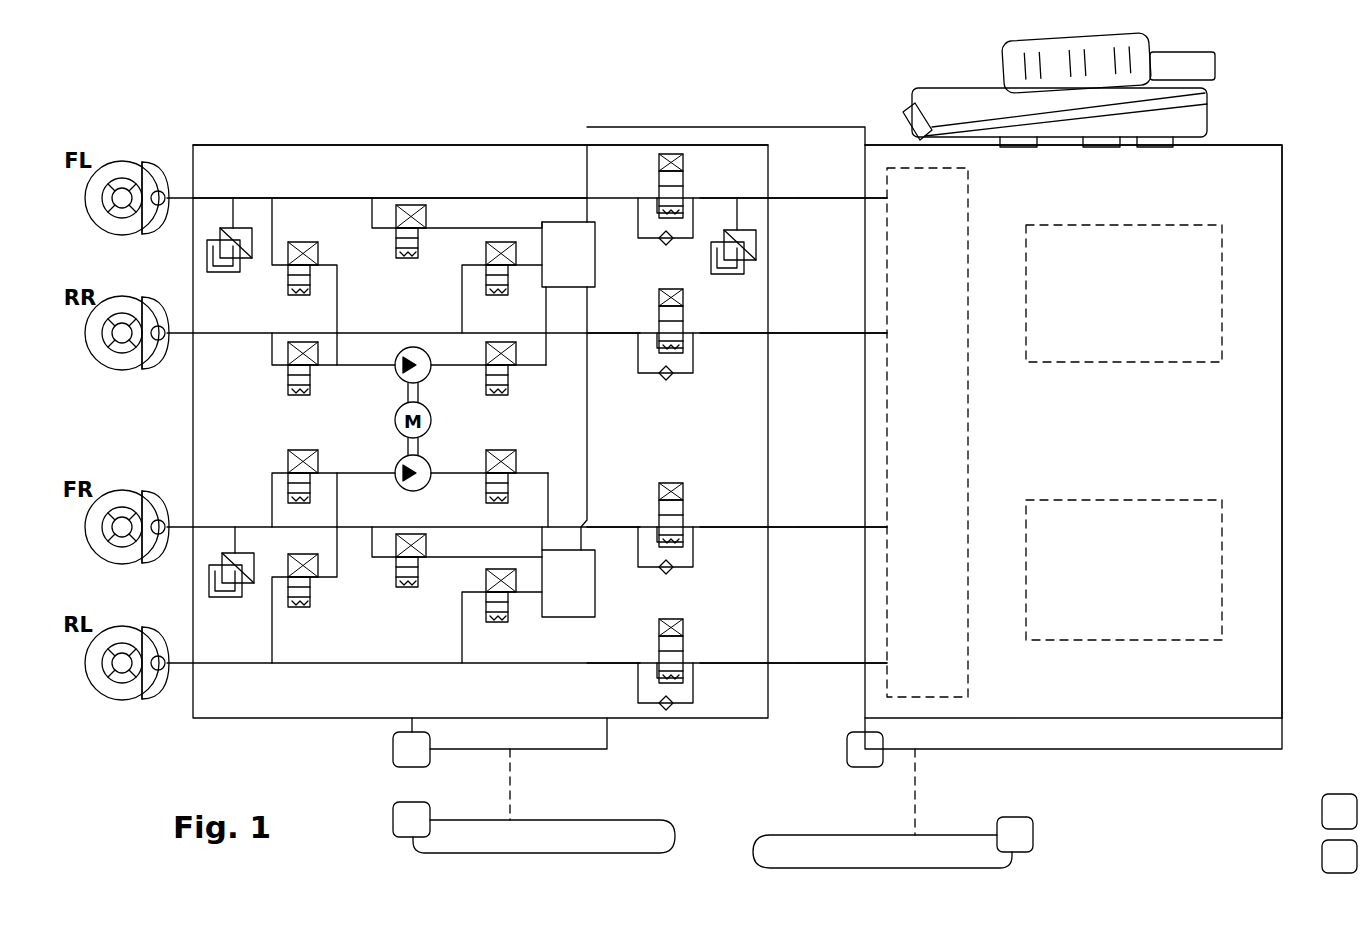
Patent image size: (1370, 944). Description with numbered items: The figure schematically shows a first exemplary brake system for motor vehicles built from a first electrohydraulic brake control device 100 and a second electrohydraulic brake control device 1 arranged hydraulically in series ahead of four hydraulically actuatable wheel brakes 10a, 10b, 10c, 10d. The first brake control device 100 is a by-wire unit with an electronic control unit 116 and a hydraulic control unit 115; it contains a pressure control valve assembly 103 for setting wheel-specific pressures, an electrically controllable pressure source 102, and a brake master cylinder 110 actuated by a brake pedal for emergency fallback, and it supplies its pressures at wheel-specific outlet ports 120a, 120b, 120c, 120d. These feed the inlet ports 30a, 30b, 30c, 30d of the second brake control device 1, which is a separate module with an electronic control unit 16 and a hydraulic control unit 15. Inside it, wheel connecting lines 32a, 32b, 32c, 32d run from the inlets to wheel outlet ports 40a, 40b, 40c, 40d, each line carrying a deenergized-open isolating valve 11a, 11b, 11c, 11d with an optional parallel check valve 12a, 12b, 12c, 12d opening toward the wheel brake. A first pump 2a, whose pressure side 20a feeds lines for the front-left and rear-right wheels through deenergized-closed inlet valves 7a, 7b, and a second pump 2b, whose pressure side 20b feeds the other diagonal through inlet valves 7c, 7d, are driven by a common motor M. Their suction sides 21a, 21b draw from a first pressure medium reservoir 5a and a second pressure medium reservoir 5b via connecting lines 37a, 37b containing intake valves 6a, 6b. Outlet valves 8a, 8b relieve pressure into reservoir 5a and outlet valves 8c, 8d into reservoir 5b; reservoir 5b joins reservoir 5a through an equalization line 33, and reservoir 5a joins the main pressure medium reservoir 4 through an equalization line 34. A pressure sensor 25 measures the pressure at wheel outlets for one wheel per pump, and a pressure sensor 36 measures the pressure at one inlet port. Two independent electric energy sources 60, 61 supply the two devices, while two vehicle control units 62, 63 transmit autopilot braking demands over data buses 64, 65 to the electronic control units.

The second electrohydraulic brake control device 1 is at (397, 140).
The main pressure medium reservoir 4 is at (947, 95).
The hydraulic open-loop and closed-loop control unit 15 is at (276, 143).
The equalization line 34 is at (680, 126).
The first electrohydraulic brake control device 100 is at (1262, 128).
The hydraulic open-loop and closed-loop control unit 115 is at (1250, 184).
The brake master cylinder 110 is at (1195, 300).
The pressure control valve assembly 103 is at (940, 432).
The electrically controllable pressure source 102 is at (1195, 575).
The electronic open-loop and closed-loop control unit 116 is at (1147, 742).
The electronic open-loop and closed-loop control unit 16 is at (472, 750).
The first electric energy source 60 is at (1320, 812).
The second electric energy source 61 is at (1320, 856).
The vehicle control unit 62 is at (857, 848).
The vehicle control unit 63 is at (662, 838).
The data bus 64 is at (918, 792).
The data bus 65 is at (512, 795).
The wheel brake 10a is at (149, 182).
The wheel brake 10b is at (149, 318).
The wheel brake 10c is at (149, 512).
The wheel brake 10d is at (149, 648).
The wheel outlet port 40a is at (176, 212).
The wheel outlet port 40b is at (176, 347).
The wheel outlet port 40c is at (176, 541).
The wheel outlet port 40d is at (176, 677).
The pressure sensor 25 is at (231, 223).
The pressure sensor 36 is at (748, 265).
The inlet valve 7a is at (285, 278).
The inlet valve 7b is at (285, 383).
The inlet valve 7c is at (285, 462).
The inlet valve 7d is at (306, 605).
The outlet valve 8a is at (420, 214).
The outlet valve 8b is at (500, 243).
The outlet valve 8c is at (392, 588).
The outlet valve 8d is at (482, 585).
The first pressure medium reservoir 5a is at (558, 238).
The second pressure medium reservoir 5b is at (565, 601).
The first pump 2a is at (413, 350).
The second pump 2b is at (417, 489).
The pressure side 20a is at (401, 357).
The pressure side 20b is at (400, 482).
The suction side 21a is at (423, 352).
The suction side 21b is at (425, 484).
The intake valve 6a is at (511, 378).
The intake valve 6b is at (486, 460).
The hydraulic connecting line 37a is at (549, 375).
The hydraulic connecting line 37b is at (550, 485).
The equalization line 33 is at (591, 440).
The wheel connecting line 32a is at (470, 196).
The wheel connecting line 32b is at (605, 338).
The wheel connecting line 32c is at (616, 524).
The wheel connecting line 32d is at (616, 660).
The isolating valve 11a is at (691, 190).
The isolating valve 11b is at (656, 333).
The isolating valve 11c is at (691, 519).
The isolating valve 11d is at (691, 655).
The check valve 12a is at (665, 246).
The check valve 12b is at (674, 377).
The check valve 12c is at (674, 571).
The check valve 12d is at (667, 710).
The inlet port 30a is at (782, 205).
The inlet port 30b is at (782, 340).
The inlet port 30c is at (782, 534).
The inlet port 30d is at (782, 670).
The outlet port 120a is at (848, 195).
The outlet port 120b is at (848, 330).
The outlet port 120c is at (848, 524).
The outlet port 120d is at (848, 660).